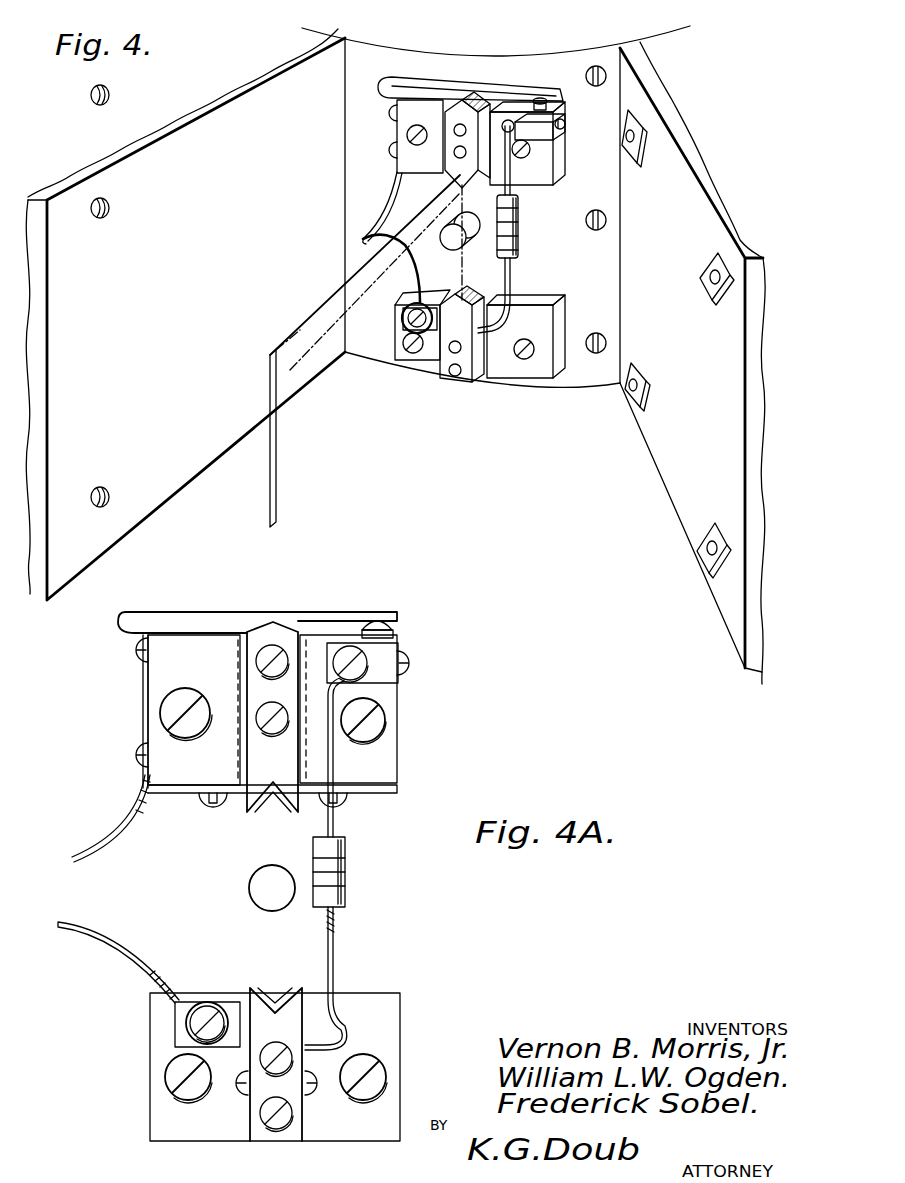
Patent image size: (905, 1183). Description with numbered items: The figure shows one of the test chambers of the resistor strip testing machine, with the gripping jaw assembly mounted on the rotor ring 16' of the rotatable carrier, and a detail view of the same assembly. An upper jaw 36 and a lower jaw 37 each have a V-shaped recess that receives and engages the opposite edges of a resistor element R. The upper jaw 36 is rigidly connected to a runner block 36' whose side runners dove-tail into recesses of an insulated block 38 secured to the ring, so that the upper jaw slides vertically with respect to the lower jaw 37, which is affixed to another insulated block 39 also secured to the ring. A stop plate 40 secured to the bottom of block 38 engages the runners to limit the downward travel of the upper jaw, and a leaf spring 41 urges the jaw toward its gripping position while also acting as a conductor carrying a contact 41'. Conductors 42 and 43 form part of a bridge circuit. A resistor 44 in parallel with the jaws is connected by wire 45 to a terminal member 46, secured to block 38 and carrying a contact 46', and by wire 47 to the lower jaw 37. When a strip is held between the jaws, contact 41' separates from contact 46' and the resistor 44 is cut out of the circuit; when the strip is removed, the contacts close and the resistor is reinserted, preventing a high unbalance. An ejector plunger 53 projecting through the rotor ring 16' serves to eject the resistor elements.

In FIG. 4, the rotor ring 16' is at (409, 29).
In FIG. 4, the spring 41 is at (470, 55).
In FIG. 4A, the spring 41 is at (257, 605).
In FIG. 4A, the contact member 41' is at (377, 604).
In FIG. 4, the upper gripping jaw 36 is at (400, 140).
In FIG. 4A, the upper gripping jaw 36 is at (272, 717).
In FIG. 4, the runner block 36' is at (500, 55).
In FIG. 4, the lower gripping jaw 37 is at (463, 382).
In FIG. 4A, the lower gripping jaw 37 is at (285, 1038).
In FIG. 4, the insulated block 38 is at (410, 117).
In FIG. 4A, the insulated block 38 is at (209, 670).
In FIG. 4, the insulated block 39 is at (542, 373).
In FIG. 4A, the insulated block 39 is at (220, 1131).
In FIG. 4A, the stop plate 40 is at (362, 788).
In FIG. 4, the conductor 42 is at (385, 210).
In FIG. 4A, the conductor 42 is at (110, 828).
In FIG. 4, the conductor 43 is at (400, 240).
In FIG. 4A, the conductor 43 is at (112, 945).
In FIG. 4, the resistor 44 is at (518, 225).
In FIG. 4A, the resistor 44 is at (346, 857).
In FIG. 4, the wire 45 is at (520, 190).
In FIG. 4A, the wire 45 is at (334, 817).
In FIG. 4, the terminal member 46 is at (612, 120).
In FIG. 4A, the terminal member 46 is at (380, 709).
In FIG. 4, the contact 46' is at (616, 87).
In FIG. 4A, the contact 46' is at (413, 625).
In FIG. 4, the wire 47 is at (513, 273).
In FIG. 4A, the wire 47 is at (337, 950).
In FIG. 4, the ejector plunger 53 is at (453, 238).
In FIG. 4A, the ejector plunger 53 is at (273, 888).
In FIG. 4, the resistor element R is at (328, 467).